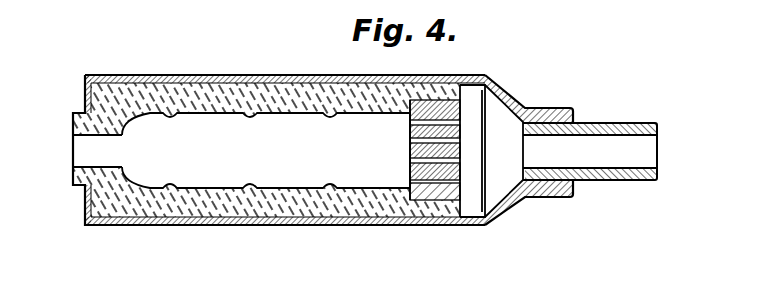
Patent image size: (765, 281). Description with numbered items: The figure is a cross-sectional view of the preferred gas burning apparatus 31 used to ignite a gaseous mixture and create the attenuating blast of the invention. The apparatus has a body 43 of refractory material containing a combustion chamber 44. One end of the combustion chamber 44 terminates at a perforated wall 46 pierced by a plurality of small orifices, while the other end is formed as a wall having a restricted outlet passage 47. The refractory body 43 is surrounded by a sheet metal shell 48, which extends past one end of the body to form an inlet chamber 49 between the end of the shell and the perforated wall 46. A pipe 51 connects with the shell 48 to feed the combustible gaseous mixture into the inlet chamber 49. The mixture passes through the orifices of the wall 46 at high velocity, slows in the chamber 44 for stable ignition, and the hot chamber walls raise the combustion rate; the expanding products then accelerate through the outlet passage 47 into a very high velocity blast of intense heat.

The cartridge / casing 31 is at (136, 230).
The body of refractory material 43 is at (280, 92).
The combustion chamber 44 is at (218, 122).
The perforated wall 46 is at (437, 108).
The restricted outlet passage 47 is at (85, 153).
The sheet metal shell 48 is at (222, 223).
The inlet chamber 49 is at (507, 113).
The pipe 51 is at (618, 123).